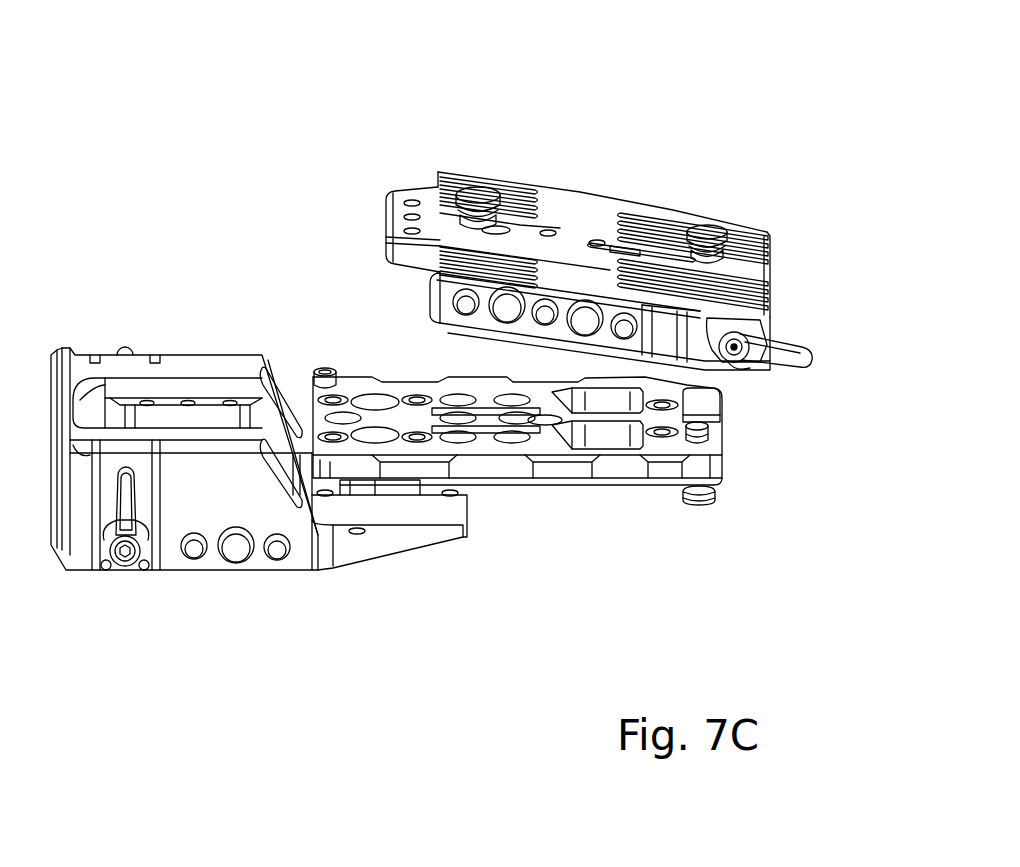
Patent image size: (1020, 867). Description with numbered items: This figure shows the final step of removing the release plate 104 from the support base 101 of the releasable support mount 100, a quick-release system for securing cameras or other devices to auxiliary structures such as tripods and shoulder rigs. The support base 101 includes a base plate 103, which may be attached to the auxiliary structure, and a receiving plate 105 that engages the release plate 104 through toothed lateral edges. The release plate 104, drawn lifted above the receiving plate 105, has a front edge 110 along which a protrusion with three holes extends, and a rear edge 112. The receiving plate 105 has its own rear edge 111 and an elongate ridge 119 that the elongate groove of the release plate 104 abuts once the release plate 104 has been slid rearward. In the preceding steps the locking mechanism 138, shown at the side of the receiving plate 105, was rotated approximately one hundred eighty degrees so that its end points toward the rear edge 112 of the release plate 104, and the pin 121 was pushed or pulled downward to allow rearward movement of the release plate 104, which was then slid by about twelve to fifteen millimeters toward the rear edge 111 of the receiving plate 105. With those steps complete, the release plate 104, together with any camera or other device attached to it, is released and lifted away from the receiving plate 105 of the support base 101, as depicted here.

The releasable support mount 100 is at (782, 70).
The support base 101 is at (253, 602).
The base plate 103 is at (81, 341).
The release plate 104 is at (585, 170).
The receiving plate 105 is at (774, 486).
The front edge 110 is at (420, 300).
The rear edge 111 is at (734, 445).
The rear edge 112 is at (782, 262).
The elongate ridge 119 is at (734, 405).
The pin 121 is at (700, 520).
The locking mechanism 138 is at (827, 361).